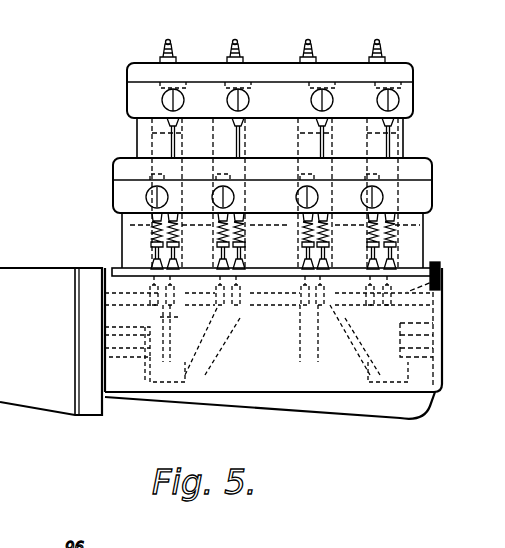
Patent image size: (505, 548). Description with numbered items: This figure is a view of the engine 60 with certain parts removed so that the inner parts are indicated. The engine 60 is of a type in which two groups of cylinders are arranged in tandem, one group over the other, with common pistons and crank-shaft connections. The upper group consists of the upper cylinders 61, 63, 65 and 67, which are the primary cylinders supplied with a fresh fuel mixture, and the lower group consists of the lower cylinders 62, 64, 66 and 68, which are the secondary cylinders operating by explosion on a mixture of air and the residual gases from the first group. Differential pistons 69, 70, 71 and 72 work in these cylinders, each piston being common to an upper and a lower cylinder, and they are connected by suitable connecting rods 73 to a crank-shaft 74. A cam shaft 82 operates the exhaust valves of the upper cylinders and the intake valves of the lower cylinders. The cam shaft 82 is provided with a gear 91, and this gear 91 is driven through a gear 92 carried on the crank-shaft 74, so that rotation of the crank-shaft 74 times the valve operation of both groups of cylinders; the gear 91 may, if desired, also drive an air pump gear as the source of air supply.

The engine 60 is at (137, 140).
The upper cylinder 61 is at (158, 92).
The lower cylinder 62 is at (147, 194).
The upper cylinder 63 is at (217, 83).
The lower cylinder 64 is at (250, 178).
The upper cylinder 65 is at (307, 88).
The lower cylinder 66 is at (333, 175).
The upper cylinder 67 is at (367, 88).
The lower cylinder 68 is at (403, 178).
The differential piston 69 is at (138, 248).
The differential piston 70 is at (290, 226).
The differential piston 71 is at (295, 234).
The differential piston 72 is at (406, 247).
The connecting rod 73 is at (176, 317).
The crank-shaft 74 is at (195, 348).
The cam shaft 82 is at (437, 272).
The gear 91 is at (440, 302).
The gear 92 is at (443, 330).